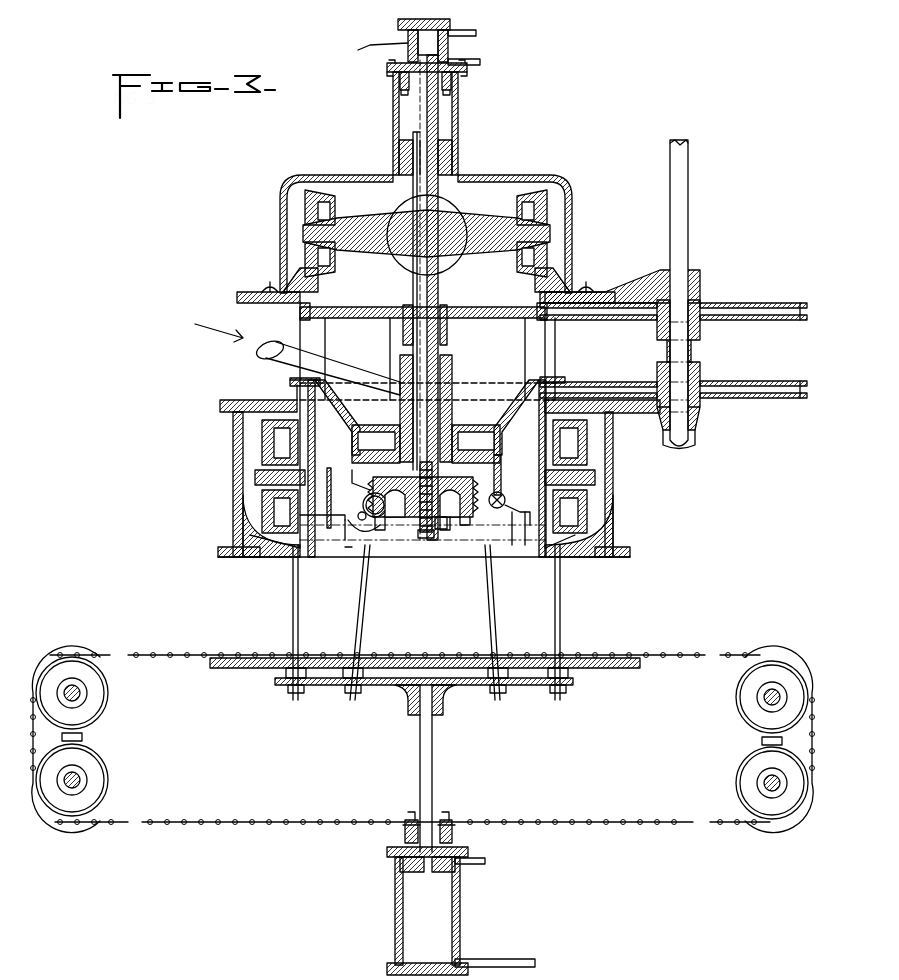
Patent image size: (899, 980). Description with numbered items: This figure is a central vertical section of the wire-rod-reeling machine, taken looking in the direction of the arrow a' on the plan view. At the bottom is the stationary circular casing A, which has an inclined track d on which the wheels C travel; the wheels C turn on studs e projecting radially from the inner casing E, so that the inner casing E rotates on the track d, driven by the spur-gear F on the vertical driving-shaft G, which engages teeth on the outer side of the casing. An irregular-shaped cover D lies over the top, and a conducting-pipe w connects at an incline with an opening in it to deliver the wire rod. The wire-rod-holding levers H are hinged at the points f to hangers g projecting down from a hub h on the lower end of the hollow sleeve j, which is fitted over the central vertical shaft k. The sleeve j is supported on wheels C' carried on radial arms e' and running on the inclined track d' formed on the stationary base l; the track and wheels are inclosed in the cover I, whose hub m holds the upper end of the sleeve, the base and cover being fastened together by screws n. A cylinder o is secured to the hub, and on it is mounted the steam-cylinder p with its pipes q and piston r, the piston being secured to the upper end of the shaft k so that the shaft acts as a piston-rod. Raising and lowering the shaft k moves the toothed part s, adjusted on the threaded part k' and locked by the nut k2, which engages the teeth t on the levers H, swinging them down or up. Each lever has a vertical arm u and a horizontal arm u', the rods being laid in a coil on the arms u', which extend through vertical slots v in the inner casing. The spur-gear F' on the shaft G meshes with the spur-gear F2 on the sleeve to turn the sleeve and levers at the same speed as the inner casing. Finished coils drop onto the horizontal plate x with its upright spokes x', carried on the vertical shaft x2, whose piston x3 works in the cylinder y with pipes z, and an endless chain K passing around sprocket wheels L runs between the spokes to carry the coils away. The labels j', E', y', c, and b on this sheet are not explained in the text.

The piston r is at (414, 60).
The steam supply and exhaust pipes q is at (486, 55).
The steam-cylinder p is at (377, 52).
The cylinder o is at (458, 107).
The hub m is at (452, 152).
The central vertical shaft k is at (449, 297).
The hollow shaft or sleeve j is at (390, 300).
The cover or casing I is at (572, 229).
The radial arms e' is at (426, 237).
The wheels C' is at (440, 205).
The screws n is at (268, 290).
The arrow a' is at (310, 286).
The inclined track d' is at (536, 286).
The base l is at (615, 292).
The vertical driving-shaft G is at (688, 216).
The spur-gear F' is at (673, 324).
The spur-gear F is at (673, 405).
The spur-gear F2 is at (520, 322).
The conducting-pipe w is at (268, 343).
The sleeve j' is at (417, 403).
The cover D is at (248, 400).
The stationary circular casing A is at (233, 490).
The wheels C is at (405, 474).
The studs e is at (424, 473).
The inner casing E is at (325, 467).
The hopper wall E' is at (520, 468).
The hub h is at (358, 450).
The toothed part s is at (378, 495).
The hinge points f is at (358, 514).
The hangers g is at (352, 483).
The plate y' is at (321, 498).
The arm u is at (511, 471).
The teeth t is at (505, 498).
The section line c is at (368, 522).
The nut k2 is at (405, 525).
The threaded part k' is at (424, 524).
The vertical slots v is at (443, 530).
The section line b is at (446, 528).
The wire-rod-holding levers H is at (352, 530).
The arm u' is at (524, 548).
The inclined bearing surface or track d is at (414, 557).
The upright spokes or arms x' is at (436, 622).
The horizontal plate or disk x is at (425, 686).
The endless chain K is at (660, 655).
The sprocket wheels L is at (95, 782).
The vertical shaft x2 is at (432, 782).
The piston x3 is at (440, 872).
The cylinder y is at (437, 911).
The pipes z is at (485, 861).